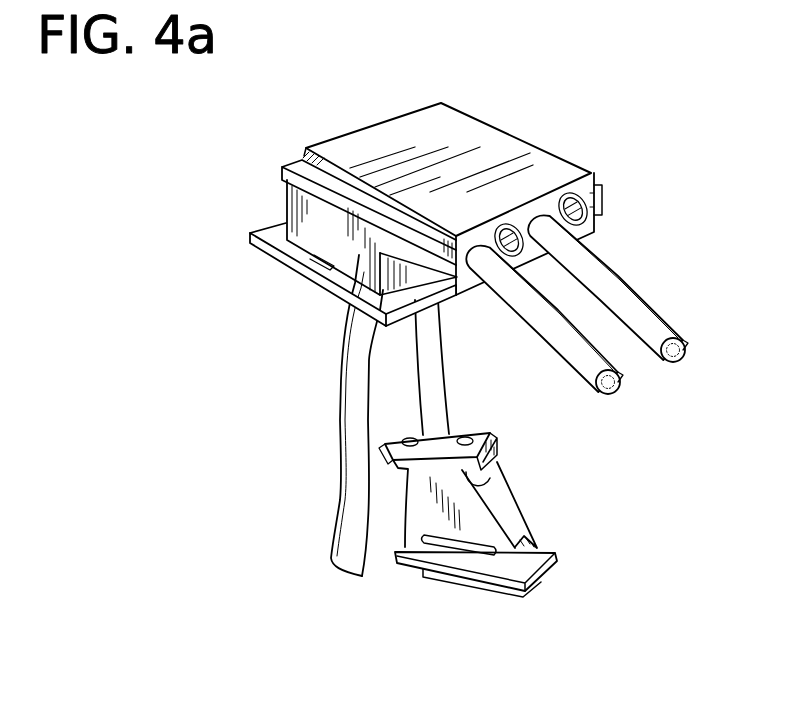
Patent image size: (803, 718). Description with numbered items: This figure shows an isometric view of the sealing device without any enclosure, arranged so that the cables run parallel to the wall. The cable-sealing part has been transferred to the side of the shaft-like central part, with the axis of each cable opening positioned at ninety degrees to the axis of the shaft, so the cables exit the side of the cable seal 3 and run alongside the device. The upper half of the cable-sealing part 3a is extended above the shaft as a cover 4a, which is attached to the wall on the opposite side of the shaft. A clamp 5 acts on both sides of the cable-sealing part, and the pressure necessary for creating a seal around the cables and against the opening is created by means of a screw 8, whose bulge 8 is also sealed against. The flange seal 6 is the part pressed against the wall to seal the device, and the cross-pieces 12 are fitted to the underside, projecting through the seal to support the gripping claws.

The cable seal 3 is at (593, 223).
The upper half of the cable-sealing part 3a is at (597, 187).
The cover 4a is at (462, 129).
The clamp 5 is at (358, 263).
The flange seal 6 is at (278, 238).
The screw 8 is at (279, 174).
The cross-pieces 12 is at (317, 266).